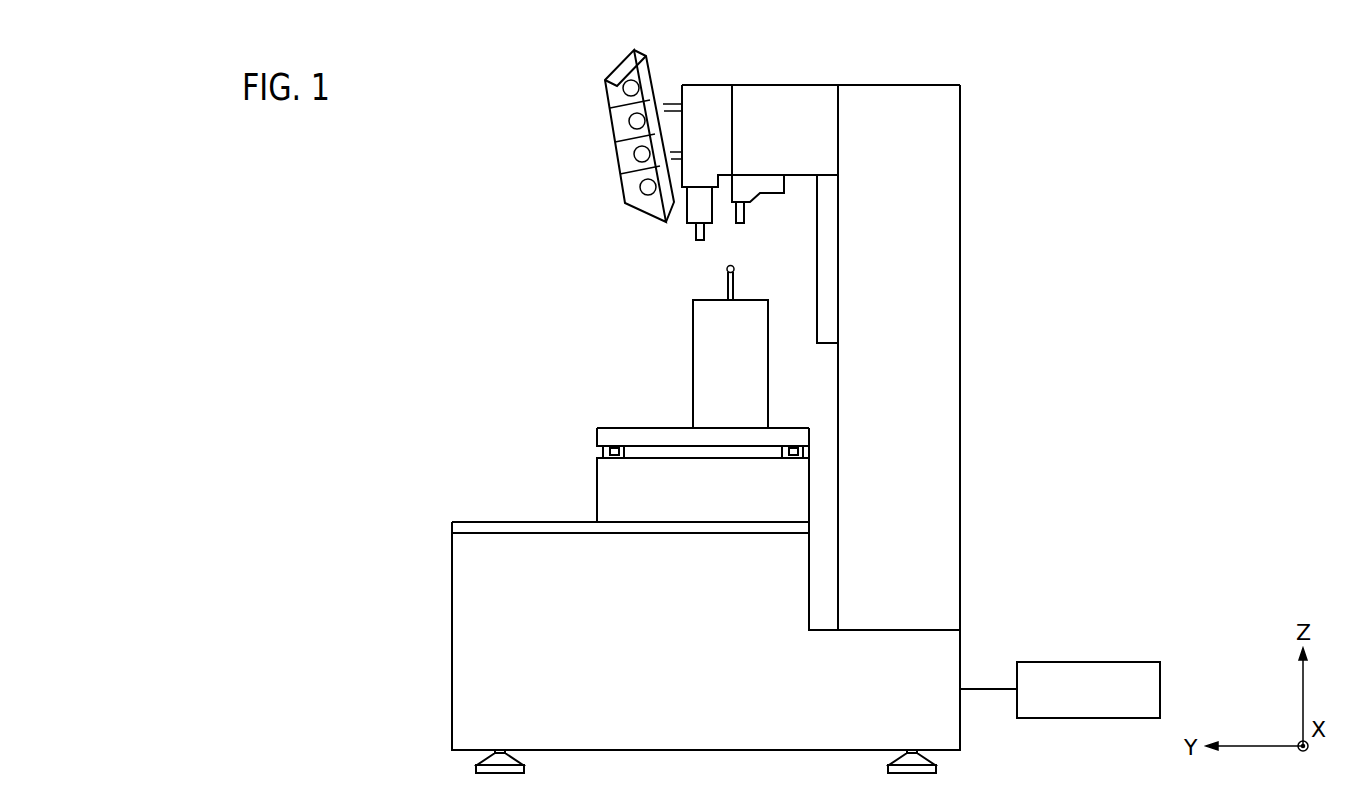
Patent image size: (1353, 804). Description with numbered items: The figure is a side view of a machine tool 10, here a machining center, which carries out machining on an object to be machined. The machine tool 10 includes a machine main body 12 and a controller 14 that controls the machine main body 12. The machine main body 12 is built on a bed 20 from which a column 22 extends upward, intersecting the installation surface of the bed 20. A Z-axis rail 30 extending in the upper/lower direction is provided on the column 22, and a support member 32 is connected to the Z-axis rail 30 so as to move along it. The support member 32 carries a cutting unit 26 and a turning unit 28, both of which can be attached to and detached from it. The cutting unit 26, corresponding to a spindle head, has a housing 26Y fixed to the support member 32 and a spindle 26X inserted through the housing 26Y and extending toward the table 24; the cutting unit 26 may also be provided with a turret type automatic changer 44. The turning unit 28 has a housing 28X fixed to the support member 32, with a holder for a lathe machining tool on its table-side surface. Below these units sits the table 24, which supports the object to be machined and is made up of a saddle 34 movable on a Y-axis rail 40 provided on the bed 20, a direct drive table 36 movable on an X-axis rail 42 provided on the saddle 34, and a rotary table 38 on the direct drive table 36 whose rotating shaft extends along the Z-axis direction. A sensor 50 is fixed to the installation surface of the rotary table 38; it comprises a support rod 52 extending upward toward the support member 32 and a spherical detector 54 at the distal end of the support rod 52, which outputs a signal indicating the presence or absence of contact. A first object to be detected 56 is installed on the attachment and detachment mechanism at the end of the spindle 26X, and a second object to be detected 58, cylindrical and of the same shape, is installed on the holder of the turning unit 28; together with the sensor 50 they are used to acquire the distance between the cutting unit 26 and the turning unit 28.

The machine tool 10 is at (384, 165).
The machine main body 12 is at (980, 91).
The controller 14 is at (1080, 661).
The bed 20 is at (470, 589).
The column 22 is at (950, 399).
The table 24 is at (534, 394).
The cutting unit 26 is at (703, 92).
The spindle 26X is at (700, 205).
The housing 26Y is at (716, 102).
The turning unit 28 is at (784, 185).
The housing 28X is at (748, 187).
The Z-axis rail 30 is at (830, 227).
The support member 32 is at (793, 102).
The saddle 34 is at (607, 491).
The direct drive table 36 is at (607, 437).
The rotary table 38 is at (703, 356).
The Y-axis rail 40 is at (455, 527).
The X-axis rail 42 is at (619, 458).
The turret type automatic changer 44 is at (614, 78).
The sensor 50 is at (717, 271).
The support rod 52 is at (734, 281).
The detector 54 is at (718, 283).
The first object to be detected 56 is at (695, 233).
The second object to be detected 58 is at (744, 217).